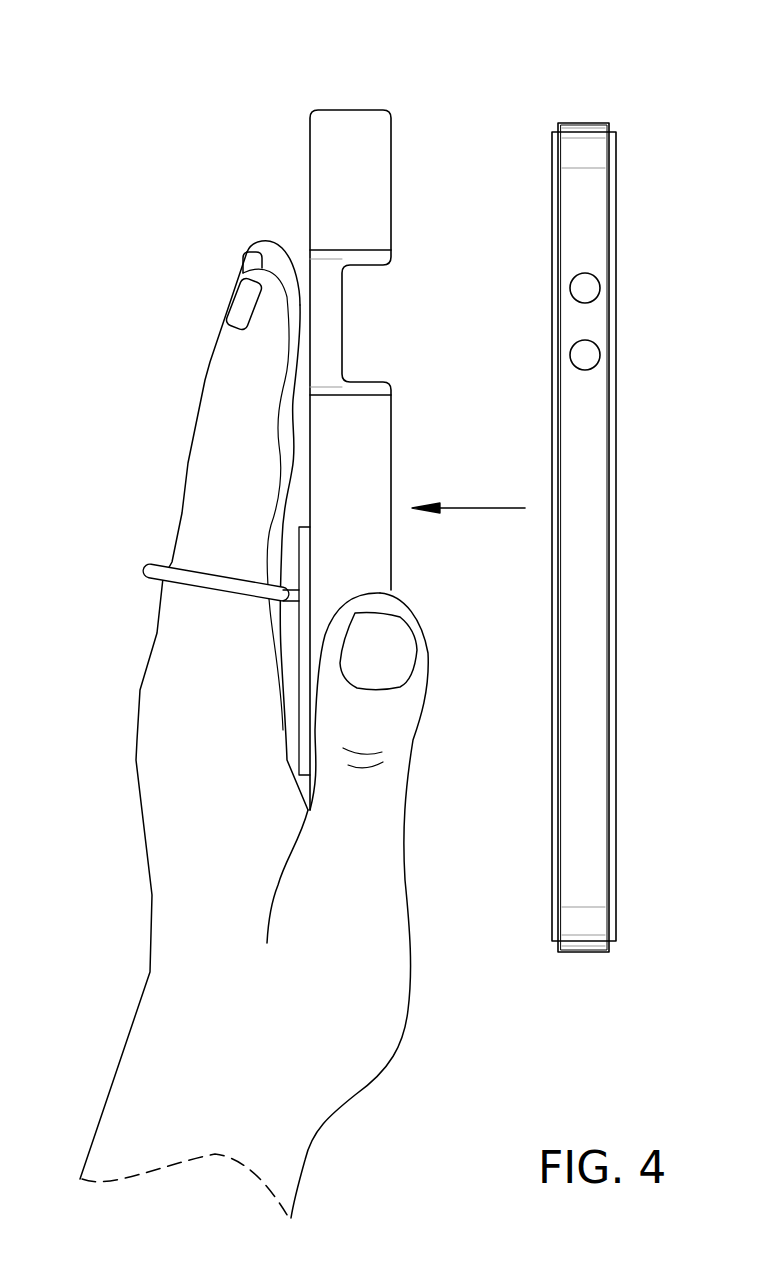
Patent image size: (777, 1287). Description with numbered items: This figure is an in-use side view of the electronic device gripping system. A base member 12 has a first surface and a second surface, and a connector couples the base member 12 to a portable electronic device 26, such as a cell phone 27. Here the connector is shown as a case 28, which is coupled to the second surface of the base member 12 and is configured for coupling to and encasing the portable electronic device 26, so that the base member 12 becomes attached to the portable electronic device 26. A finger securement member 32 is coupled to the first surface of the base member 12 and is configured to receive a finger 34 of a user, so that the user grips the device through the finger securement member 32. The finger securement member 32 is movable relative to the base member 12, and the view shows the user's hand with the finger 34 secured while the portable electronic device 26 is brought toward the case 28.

The base member 12 is at (300, 693).
The portable electronic device 26 is at (625, 485).
The cell phone 27 is at (588, 202).
The case 28 is at (342, 110).
The finger securement member 32 is at (197, 587).
The finger 34 is at (243, 270).